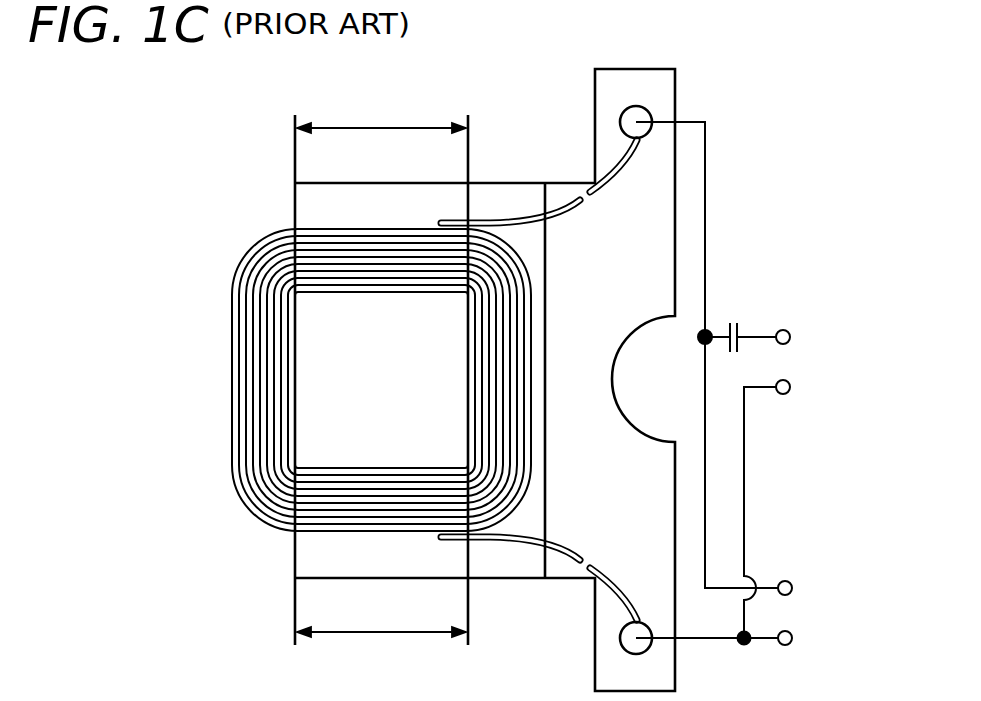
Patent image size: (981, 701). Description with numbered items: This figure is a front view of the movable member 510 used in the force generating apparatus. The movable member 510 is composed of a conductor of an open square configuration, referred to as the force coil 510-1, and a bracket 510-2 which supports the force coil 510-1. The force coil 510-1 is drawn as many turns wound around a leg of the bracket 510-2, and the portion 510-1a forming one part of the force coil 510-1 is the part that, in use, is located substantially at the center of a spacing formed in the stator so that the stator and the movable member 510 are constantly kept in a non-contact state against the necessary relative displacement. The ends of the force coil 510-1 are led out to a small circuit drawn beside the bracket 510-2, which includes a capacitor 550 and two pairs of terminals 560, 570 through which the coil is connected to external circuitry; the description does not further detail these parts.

The movable member 510 is at (463, 380).
The force coil 510-1 is at (238, 258).
The bracket 510-2 is at (306, 203).
The portion of the force coil 510-1a is at (392, 127).
The capacitor 550 is at (733, 323).
The terminal pair 560 is at (800, 574).
The terminal pair 570 is at (798, 325).